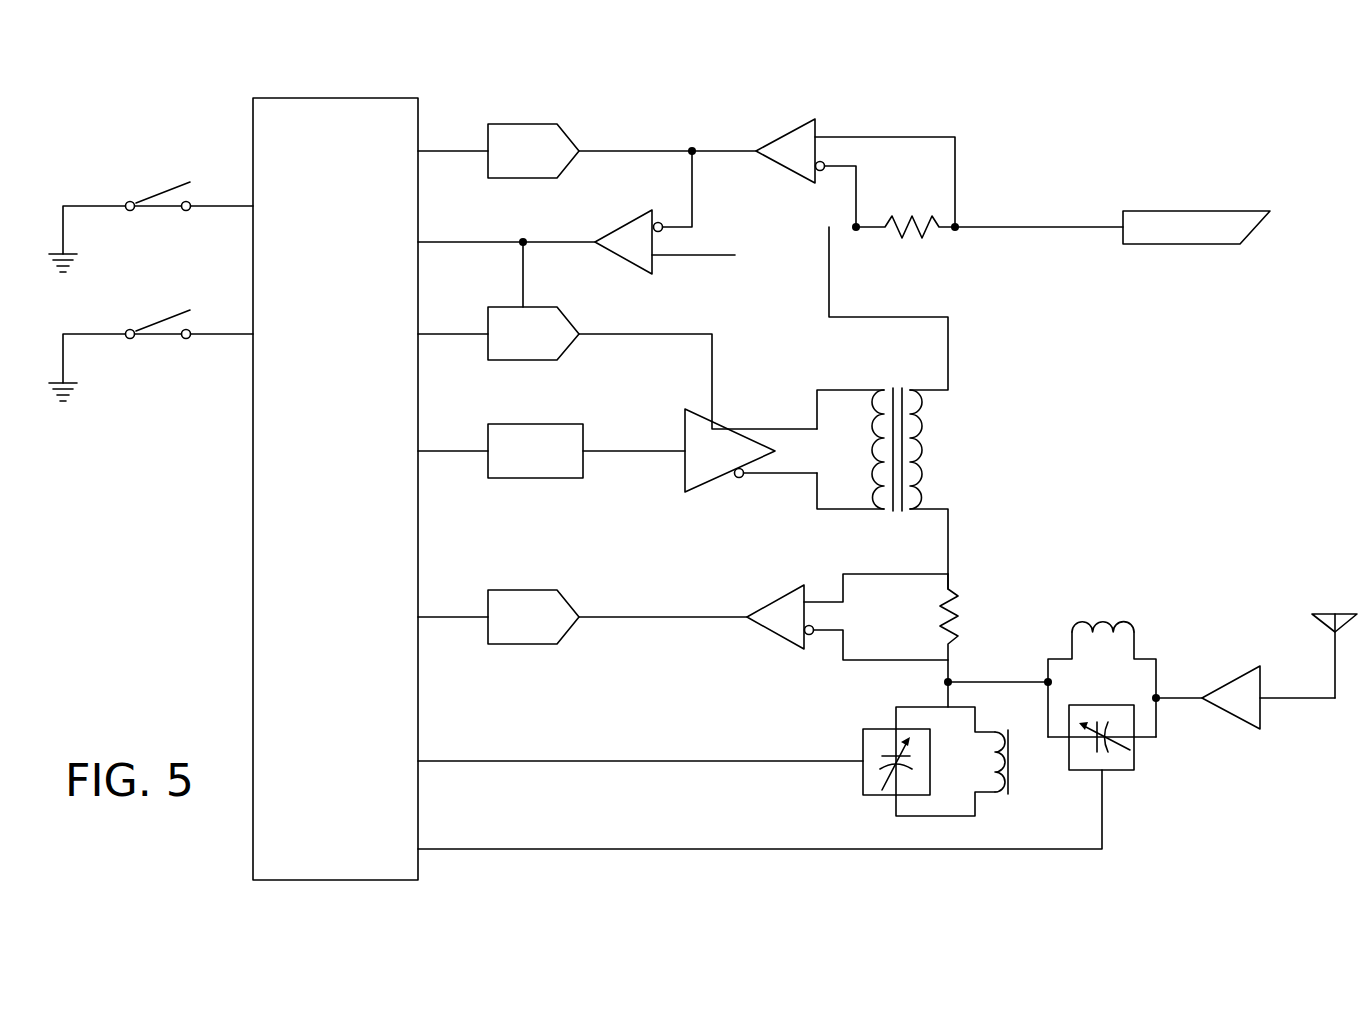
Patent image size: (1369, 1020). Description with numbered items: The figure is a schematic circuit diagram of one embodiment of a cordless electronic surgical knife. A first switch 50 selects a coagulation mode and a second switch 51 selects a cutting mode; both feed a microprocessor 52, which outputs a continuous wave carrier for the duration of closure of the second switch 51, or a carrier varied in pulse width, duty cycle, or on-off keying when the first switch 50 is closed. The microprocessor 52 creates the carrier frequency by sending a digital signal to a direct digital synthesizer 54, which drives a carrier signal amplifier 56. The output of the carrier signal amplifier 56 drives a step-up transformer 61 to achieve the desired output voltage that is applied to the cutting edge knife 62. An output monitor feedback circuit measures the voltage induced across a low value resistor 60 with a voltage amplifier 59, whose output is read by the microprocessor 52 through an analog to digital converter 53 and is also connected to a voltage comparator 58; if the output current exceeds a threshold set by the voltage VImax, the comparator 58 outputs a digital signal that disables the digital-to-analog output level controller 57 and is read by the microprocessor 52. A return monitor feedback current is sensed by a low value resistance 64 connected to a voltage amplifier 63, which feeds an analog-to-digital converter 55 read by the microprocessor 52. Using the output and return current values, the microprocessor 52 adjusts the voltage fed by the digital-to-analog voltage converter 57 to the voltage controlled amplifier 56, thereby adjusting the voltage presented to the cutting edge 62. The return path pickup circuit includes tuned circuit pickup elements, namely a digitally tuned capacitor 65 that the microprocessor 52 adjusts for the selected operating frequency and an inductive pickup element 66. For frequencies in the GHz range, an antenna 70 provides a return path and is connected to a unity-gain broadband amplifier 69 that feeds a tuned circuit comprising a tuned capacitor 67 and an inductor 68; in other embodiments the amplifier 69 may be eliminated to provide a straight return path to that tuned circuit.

The first switch 50 is at (156, 190).
The second switch 51 is at (157, 320).
The microprocessor 52 is at (321, 470).
The analog to digital converter 53 is at (523, 122).
The direct digital synthesizer 54 is at (523, 422).
The analog-to-digital converter 55 is at (523, 588).
The carrier signal amplifier 56 is at (680, 422).
The digital-to-analog output level controller 57 is at (492, 305).
The voltage comparator 58 is at (613, 224).
The voltage amplifier 59 is at (781, 133).
The low value resistor 60 is at (912, 240).
The step-up transformer 61 is at (925, 447).
The cutting edge knife 62 is at (1190, 209).
The voltage amplifier 63 is at (763, 600).
The low value resistance 64 is at (955, 607).
The digitally tuned capacitor 65 is at (860, 750).
The tuned circuit pickup element 66 is at (1010, 775).
The tuned capacitor 67 is at (1135, 760).
The inductor 68 is at (1103, 625).
The unity-gain broadband amplifier 69 is at (1228, 676).
The antenna 70 is at (1322, 612).